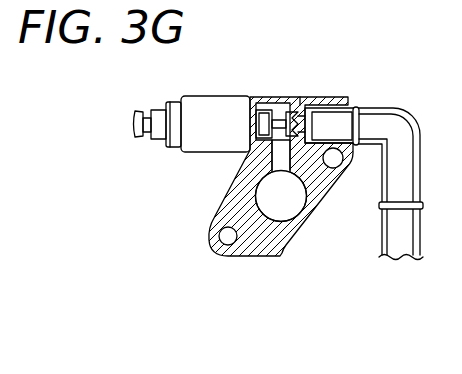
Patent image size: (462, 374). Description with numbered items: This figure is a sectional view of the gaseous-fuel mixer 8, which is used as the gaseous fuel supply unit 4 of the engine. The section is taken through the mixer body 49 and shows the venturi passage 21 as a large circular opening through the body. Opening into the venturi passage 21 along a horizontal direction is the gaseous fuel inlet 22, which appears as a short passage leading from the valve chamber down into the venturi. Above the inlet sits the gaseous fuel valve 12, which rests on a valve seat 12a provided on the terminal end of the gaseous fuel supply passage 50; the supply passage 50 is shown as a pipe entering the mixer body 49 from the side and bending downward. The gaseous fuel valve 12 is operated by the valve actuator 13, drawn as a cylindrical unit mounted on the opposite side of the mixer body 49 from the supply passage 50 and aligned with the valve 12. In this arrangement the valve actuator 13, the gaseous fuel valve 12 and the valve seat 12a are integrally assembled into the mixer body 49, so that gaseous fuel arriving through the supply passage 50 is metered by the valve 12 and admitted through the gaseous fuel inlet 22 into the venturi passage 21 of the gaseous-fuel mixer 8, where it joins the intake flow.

The gaseous fuel supply unit 4 is at (214, 187).
The gaseous-fuel mixer 8 is at (214, 187).
The gaseous fuel valve 12 is at (289, 122).
The valve seat 12a is at (296, 112).
The valve actuator 13 is at (221, 103).
The venturi passage 21 is at (270, 218).
The gaseous fuel inlet 22 is at (278, 163).
The mixer body 49 is at (314, 226).
The gaseous fuel supply passage 50 is at (406, 109).